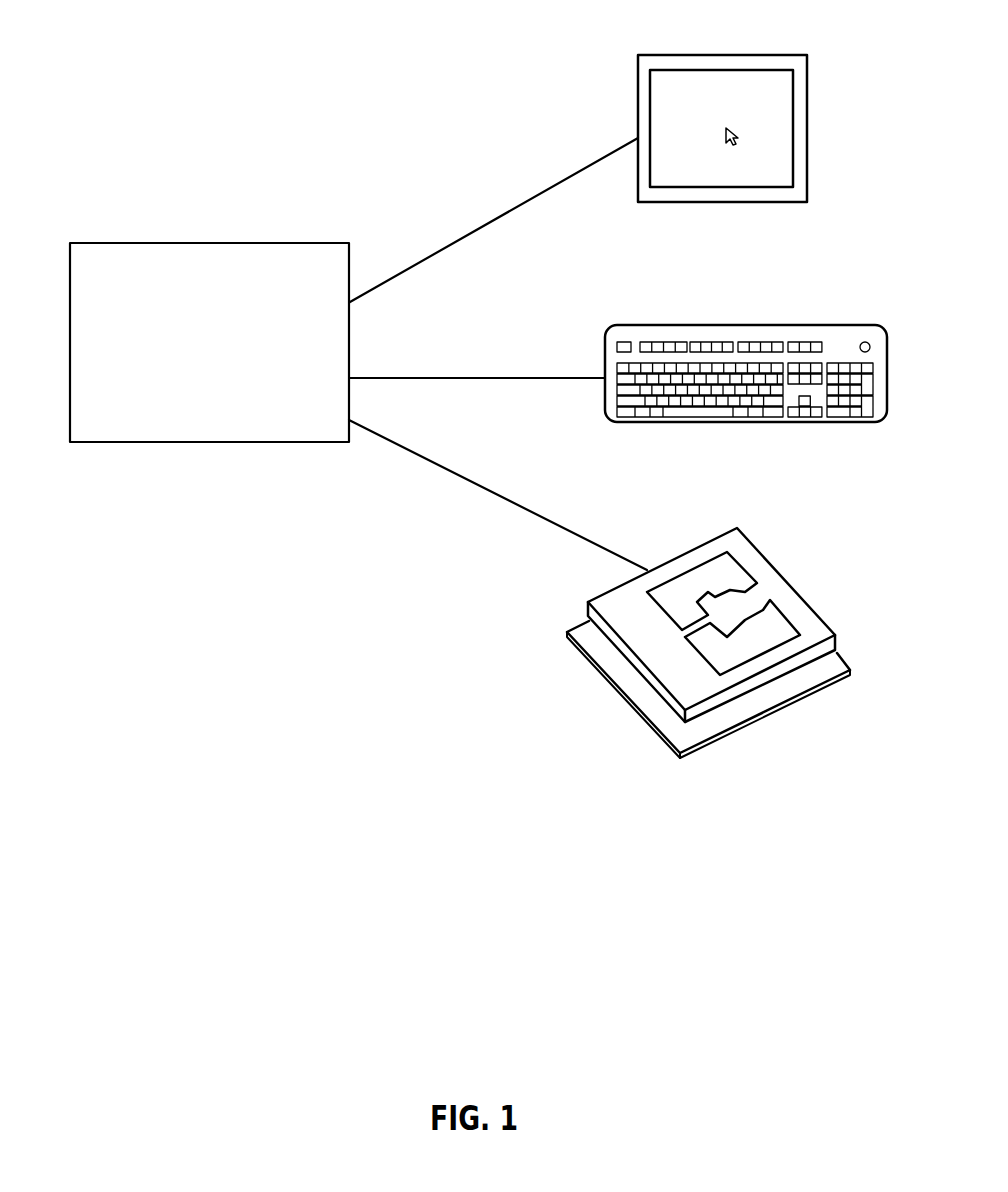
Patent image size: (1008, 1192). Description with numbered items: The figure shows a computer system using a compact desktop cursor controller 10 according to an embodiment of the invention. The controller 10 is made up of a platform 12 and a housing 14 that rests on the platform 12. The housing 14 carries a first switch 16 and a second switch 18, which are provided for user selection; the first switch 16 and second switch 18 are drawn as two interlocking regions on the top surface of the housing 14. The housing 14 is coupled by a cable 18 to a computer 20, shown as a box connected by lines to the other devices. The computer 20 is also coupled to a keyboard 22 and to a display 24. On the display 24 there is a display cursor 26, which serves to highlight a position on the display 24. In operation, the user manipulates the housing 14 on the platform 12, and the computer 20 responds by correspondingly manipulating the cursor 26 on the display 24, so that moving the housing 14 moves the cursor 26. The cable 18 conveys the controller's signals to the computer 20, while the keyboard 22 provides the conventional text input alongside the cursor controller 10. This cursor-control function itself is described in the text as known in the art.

The compact cursor controller 10 is at (611, 616).
The platform 12 is at (727, 735).
The housing 14 is at (835, 643).
The first switch 16 is at (743, 572).
The second switch 18 is at (502, 500).
The computer 20 is at (188, 243).
The keyboard 22 is at (887, 392).
The display 24 is at (740, 55).
The display cursor 26 is at (743, 136).